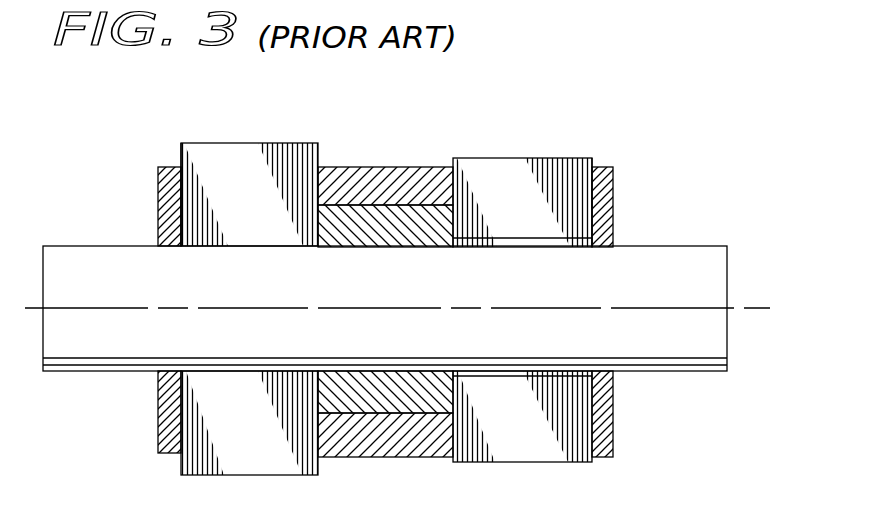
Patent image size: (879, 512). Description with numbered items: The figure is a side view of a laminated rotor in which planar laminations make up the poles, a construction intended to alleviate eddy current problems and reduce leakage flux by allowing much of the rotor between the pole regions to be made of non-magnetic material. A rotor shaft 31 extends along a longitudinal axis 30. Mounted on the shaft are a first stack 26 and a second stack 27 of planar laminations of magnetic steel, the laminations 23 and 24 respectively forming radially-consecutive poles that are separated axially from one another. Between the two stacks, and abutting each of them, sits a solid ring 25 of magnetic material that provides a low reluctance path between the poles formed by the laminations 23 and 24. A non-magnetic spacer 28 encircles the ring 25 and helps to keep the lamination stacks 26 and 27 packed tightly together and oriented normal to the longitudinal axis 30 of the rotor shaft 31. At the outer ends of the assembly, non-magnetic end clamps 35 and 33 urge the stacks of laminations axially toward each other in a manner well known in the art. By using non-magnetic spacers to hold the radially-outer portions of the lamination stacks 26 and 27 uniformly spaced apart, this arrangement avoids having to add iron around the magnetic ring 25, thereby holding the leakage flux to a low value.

The laminations 23 is at (249, 271).
The laminations 24 is at (522, 270).
The solid ring 25 is at (385, 254).
The first stack 26 is at (157, 157).
The second stack 27 is at (616, 157).
The non-magnetic spacer 28 is at (385, 276).
The longitudinal axis 30 is at (404, 280).
The rotor shaft 31 is at (396, 268).
The non-magnetic end clamp 33 is at (641, 283).
The non-magnetic end clamp 35 is at (113, 301).